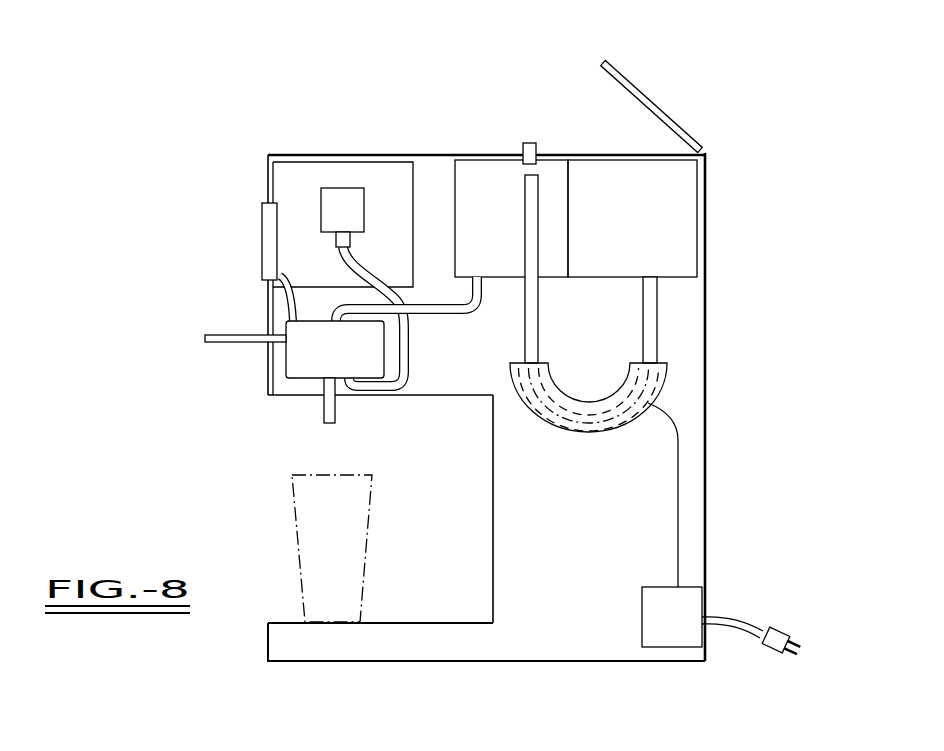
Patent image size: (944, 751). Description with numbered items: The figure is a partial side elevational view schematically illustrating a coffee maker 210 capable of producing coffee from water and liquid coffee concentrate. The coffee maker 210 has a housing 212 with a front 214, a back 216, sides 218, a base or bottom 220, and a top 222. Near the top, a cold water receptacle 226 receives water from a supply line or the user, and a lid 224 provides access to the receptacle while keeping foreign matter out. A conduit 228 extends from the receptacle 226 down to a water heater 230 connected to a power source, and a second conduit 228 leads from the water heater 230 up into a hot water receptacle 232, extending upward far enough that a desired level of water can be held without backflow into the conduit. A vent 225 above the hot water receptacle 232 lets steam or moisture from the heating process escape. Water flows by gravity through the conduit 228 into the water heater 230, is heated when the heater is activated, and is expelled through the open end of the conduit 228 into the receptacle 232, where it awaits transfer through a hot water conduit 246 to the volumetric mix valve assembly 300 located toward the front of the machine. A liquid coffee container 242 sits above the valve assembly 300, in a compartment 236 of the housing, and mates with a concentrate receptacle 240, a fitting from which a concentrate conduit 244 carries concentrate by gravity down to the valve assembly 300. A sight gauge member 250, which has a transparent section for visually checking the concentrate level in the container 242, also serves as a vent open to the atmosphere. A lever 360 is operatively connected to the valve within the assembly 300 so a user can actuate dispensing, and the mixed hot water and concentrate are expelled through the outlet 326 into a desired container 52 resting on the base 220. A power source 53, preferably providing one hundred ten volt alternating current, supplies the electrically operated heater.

The coffee maker 210 is at (577, 393).
The housing 212 is at (707, 212).
The front 214 is at (267, 292).
The back 216 is at (708, 455).
The sides 218 is at (527, 533).
The base 220 is at (500, 663).
The top 222 is at (400, 155).
The lid 224 is at (618, 72).
The vent 225 is at (532, 143).
The cold water receptacle 226 is at (683, 240).
The conduit 228 is at (539, 322).
The water heater 230 is at (607, 433).
The hot water receptacle 232 is at (500, 173).
The compartment 236 is at (277, 173).
The concentrate receptacle 240 is at (352, 243).
The liquid coffee container 242 is at (353, 188).
The concentrate conduit 244 is at (409, 376).
The hot water conduit 246 is at (450, 314).
The sight gauge member 250 is at (262, 228).
The volumetric mix valve assembly 300 is at (288, 366).
The outlet 326 is at (323, 413).
The lever 360 is at (207, 334).
The container 52 is at (295, 500).
The power source 53 is at (775, 628).